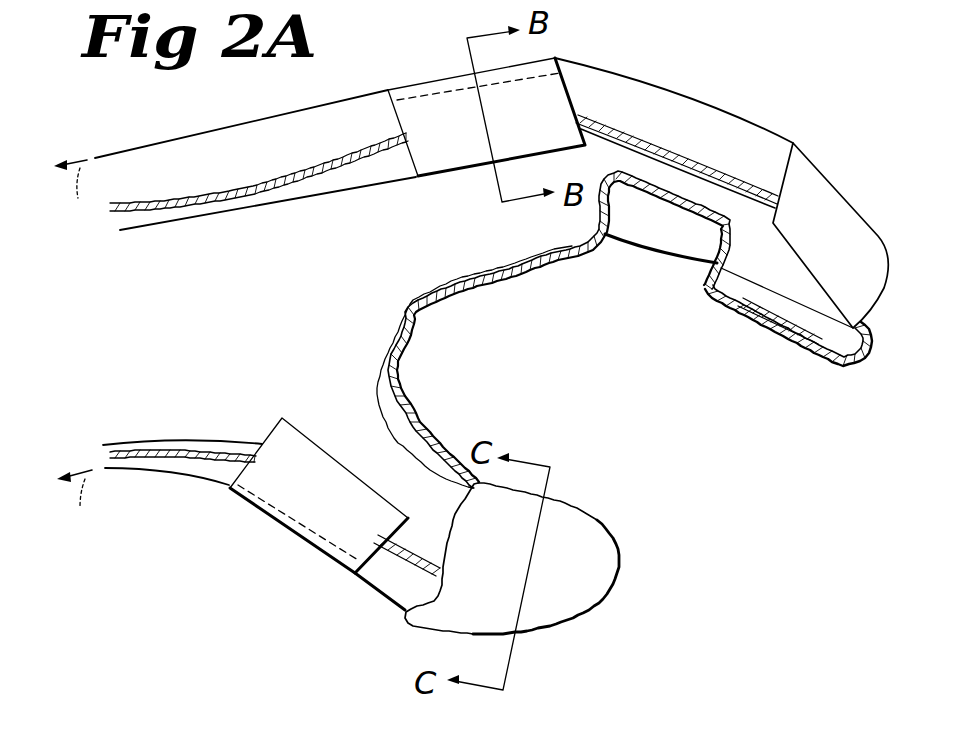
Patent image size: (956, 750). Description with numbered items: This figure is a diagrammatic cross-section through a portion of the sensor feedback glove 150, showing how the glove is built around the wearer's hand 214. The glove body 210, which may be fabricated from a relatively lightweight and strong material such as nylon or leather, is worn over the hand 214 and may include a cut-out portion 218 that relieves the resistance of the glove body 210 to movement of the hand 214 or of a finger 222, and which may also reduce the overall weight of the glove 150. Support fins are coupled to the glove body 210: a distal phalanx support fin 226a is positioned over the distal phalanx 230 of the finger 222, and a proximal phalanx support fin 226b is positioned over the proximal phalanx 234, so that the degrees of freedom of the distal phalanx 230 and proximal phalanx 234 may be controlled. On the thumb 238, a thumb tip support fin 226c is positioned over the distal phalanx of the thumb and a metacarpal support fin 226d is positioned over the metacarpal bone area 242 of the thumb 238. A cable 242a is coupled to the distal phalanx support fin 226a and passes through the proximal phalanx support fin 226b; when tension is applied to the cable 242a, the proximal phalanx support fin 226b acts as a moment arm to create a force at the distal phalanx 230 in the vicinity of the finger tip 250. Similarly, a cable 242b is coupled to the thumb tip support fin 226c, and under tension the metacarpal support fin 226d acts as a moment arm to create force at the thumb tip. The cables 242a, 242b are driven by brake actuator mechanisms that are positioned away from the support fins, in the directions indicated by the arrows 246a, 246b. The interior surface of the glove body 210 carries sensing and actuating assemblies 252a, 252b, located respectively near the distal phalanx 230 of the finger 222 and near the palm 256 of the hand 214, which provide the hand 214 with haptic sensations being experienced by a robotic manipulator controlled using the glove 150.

The sensor feedback glove 150 is at (699, 498).
The glove body 210 is at (353, 447).
The hand 214 is at (396, 367).
The cut-out portion 218 is at (660, 232).
The finger 222 is at (667, 177).
The distal phalanx support fin 226a is at (837, 212).
The proximal phalanx support fin 226b is at (548, 103).
The thumb tip support fin 226c is at (567, 590).
The metacarpal support fin 226d is at (295, 505).
The distal phalanx 230 is at (768, 275).
The proximal phalanx 234 is at (513, 213).
The thumb 238 is at (436, 483).
The metacarpal bone area 242 is at (398, 407).
The cable 242a is at (238, 120).
The cable 242b is at (163, 470).
The arrow 246a is at (63, 199).
The arrow 246b is at (69, 508).
The finger tip 250 is at (827, 332).
The sensing and actuating assembly 252a is at (407, 359).
The sensing and actuating assembly 252b is at (777, 337).
The palm 256 is at (352, 336).